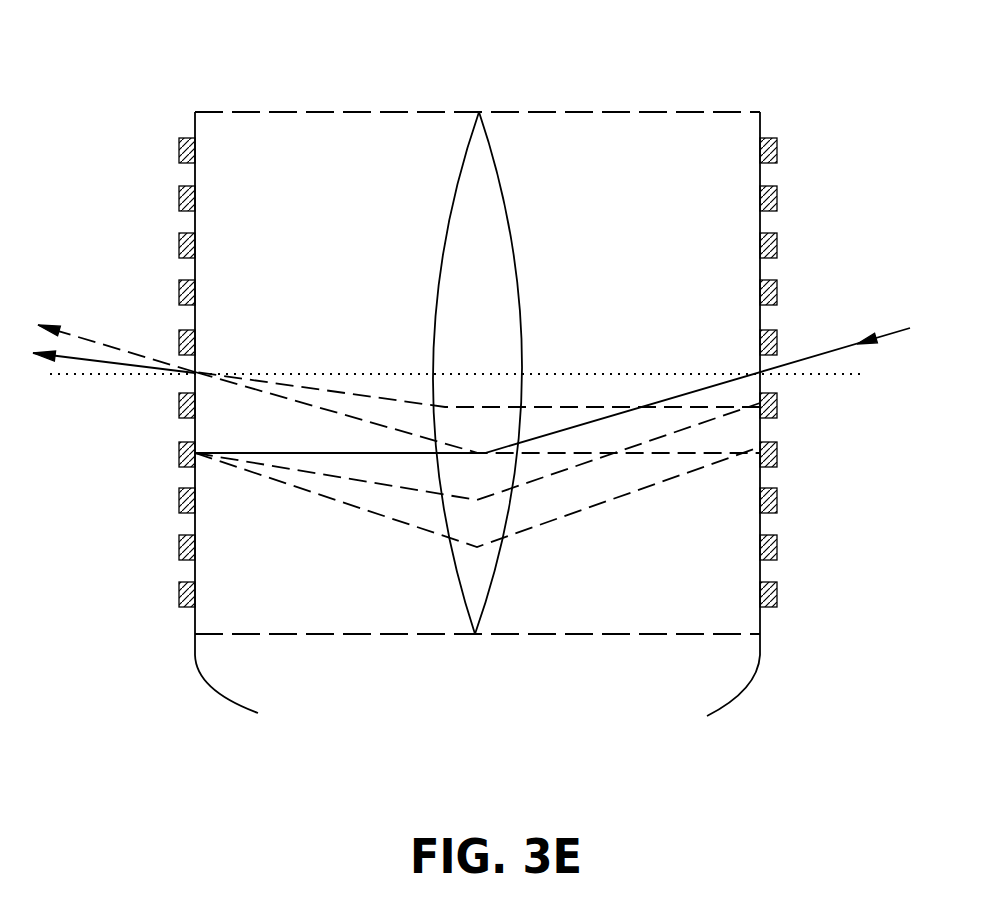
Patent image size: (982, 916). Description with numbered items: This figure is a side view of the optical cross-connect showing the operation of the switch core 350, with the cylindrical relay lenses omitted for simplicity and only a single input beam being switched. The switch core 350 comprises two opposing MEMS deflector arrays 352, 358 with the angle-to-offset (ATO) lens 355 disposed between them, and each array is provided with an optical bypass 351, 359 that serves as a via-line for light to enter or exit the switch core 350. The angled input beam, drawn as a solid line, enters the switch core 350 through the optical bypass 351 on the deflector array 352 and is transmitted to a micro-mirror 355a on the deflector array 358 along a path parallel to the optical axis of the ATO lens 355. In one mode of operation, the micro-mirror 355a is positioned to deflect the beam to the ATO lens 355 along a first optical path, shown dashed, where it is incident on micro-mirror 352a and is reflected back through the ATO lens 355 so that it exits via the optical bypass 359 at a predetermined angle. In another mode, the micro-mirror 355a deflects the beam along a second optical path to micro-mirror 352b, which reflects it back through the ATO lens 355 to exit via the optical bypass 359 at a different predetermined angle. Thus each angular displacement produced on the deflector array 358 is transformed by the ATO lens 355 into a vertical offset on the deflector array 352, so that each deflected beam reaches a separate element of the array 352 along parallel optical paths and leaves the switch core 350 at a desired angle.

The switch core 350 is at (762, 88).
The optical bypass 351 is at (770, 362).
The deflector array 352 is at (787, 423).
The micro-mirror 352a is at (777, 454).
The micro-mirror 352b is at (777, 406).
The angle-to-offset (ATO) lens 355 is at (475, 634).
The micro-mirror 355a is at (195, 454).
The deflector array 358 is at (185, 423).
The optical bypass 359 is at (192, 374).